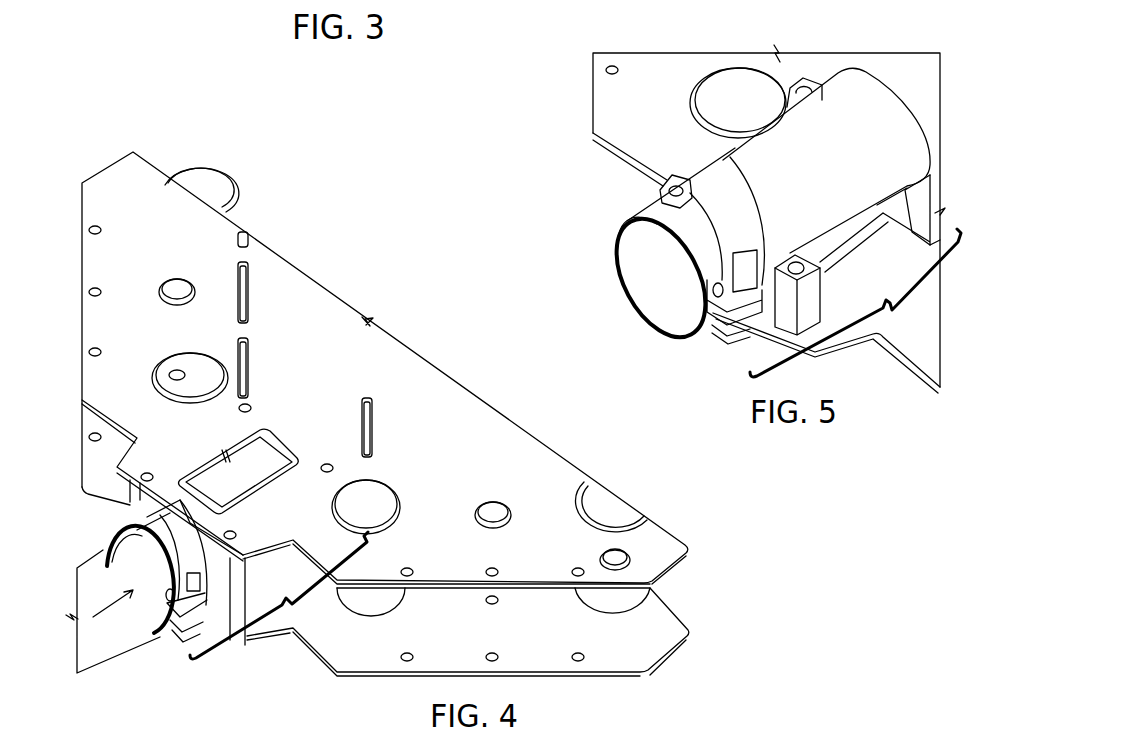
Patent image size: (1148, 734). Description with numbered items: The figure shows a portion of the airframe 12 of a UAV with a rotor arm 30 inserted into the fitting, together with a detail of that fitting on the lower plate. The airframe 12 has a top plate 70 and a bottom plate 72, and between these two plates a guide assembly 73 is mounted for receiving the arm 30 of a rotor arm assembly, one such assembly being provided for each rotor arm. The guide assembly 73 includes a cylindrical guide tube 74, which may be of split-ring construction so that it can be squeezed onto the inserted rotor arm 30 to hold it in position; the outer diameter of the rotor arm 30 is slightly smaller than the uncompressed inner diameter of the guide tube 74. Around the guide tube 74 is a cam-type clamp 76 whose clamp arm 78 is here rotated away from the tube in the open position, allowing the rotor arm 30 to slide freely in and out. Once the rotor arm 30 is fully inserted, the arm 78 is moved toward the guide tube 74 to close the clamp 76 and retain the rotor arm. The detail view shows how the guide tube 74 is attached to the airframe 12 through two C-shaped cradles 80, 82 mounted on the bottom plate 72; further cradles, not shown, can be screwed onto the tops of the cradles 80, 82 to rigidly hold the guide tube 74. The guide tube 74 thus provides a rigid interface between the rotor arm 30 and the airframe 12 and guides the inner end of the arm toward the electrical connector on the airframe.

In FIG. 4, the airframe 12 is at (409, 311).
In FIG. 4, the rotor arm 30 is at (120, 650).
In FIG. 4, the top plate 70 is at (673, 538).
In FIG. 4, the bottom plate 72 is at (682, 622).
In FIG. 5, the bottom plate 72 is at (593, 120).
In FIG. 4, the guide assembly 73 is at (279, 595).
In FIG. 5, the guide assembly 73 is at (855, 303).
In FIG. 4, the guide tube 74 is at (137, 520).
In FIG. 5, the guide tube 74 is at (735, 147).
In FIG. 4, the clamp 76 is at (175, 635).
In FIG. 5, the clamp 76 is at (633, 212).
In FIG. 4, the clamp arm 78 is at (147, 513).
In FIG. 5, the clamp arm 78 is at (747, 193).
In FIG. 5, the C-shaped cradle 80 is at (913, 233).
In FIG. 5, the C-shaped cradle 82 is at (785, 330).